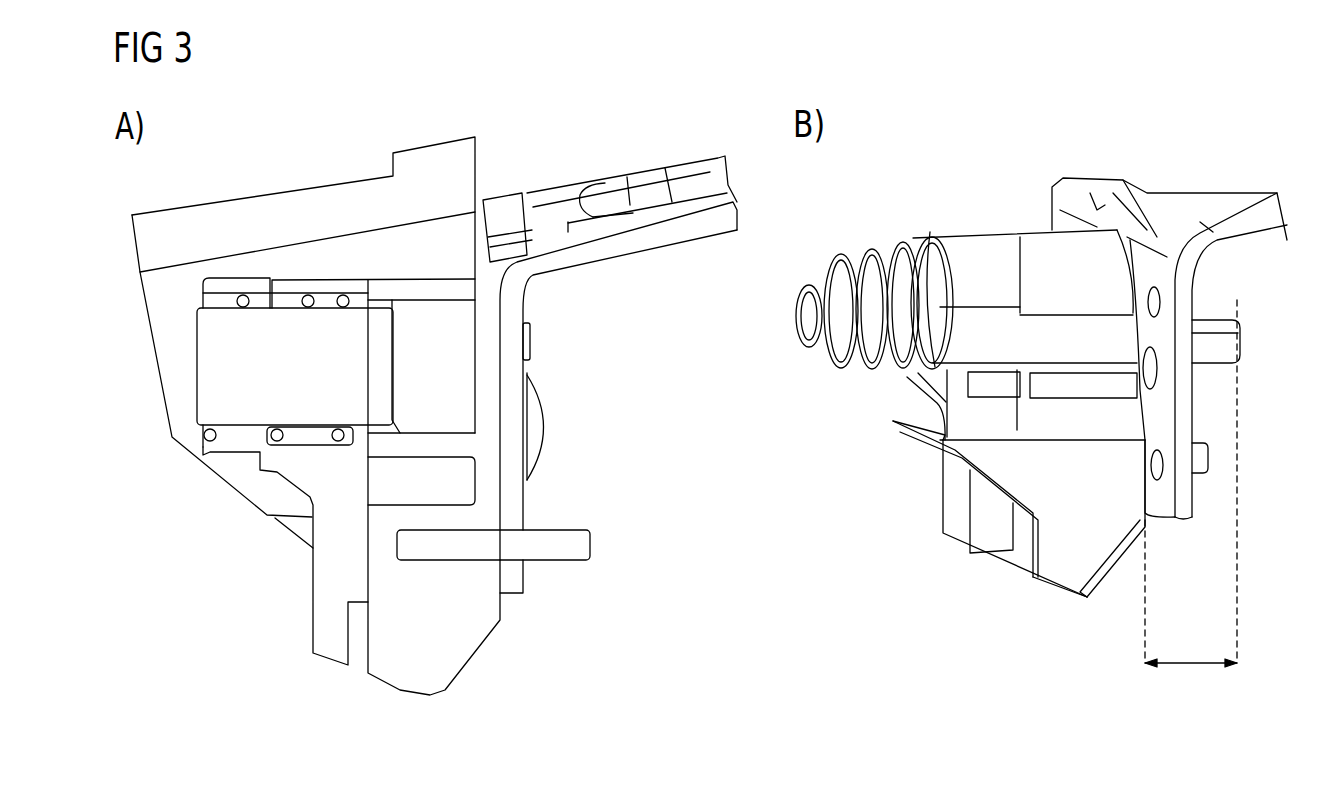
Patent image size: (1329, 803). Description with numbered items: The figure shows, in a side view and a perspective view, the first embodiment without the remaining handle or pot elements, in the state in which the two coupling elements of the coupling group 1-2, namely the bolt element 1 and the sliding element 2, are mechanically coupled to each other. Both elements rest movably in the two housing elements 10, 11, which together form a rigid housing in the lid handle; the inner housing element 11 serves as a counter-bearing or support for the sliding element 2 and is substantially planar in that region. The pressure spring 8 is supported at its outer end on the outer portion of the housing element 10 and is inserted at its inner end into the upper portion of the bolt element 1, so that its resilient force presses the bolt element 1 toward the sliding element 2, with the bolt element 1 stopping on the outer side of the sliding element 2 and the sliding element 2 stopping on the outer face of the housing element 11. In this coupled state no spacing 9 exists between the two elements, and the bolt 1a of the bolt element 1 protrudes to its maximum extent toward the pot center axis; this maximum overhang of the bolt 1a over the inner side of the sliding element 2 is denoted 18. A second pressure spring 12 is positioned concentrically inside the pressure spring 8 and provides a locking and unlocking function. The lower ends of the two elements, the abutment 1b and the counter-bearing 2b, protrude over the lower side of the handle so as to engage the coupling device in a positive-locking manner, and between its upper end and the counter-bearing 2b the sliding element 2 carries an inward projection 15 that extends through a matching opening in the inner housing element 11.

In FIG. 3A, the bolt element 1 is at (318, 480).
In FIG. 3B, the bolt element 1 is at (970, 288).
In FIG. 3A, the bolt 1a is at (224, 645).
In FIG. 3B, the bolt 1a is at (1035, 348).
In FIG. 3A, the abutment 1b is at (327, 637).
In FIG. 3B, the abutment 1b is at (957, 513).
In FIG. 3A, the coupling group 1-2 is at (498, 697).
In FIG. 3B, the coupling group 1-2 is at (1047, 229).
In FIG. 3A, the sliding element 2 is at (300, 535).
In FIG. 3B, the sliding element 2 is at (1077, 300).
In FIG. 3A, the counter-bearing 2b is at (460, 637).
In FIG. 3B, the counter-bearing 2b is at (1087, 563).
In FIG. 3A, the pressure spring 8 is at (243, 306).
In FIG. 3B, the pressure spring 8 is at (852, 262).
In FIG. 3A, the spacing 9 is at (368, 268).
In FIG. 3A, the housing element 10 is at (313, 252).
In FIG. 3A, the inner housing element 11 is at (648, 243).
In FIG. 3B, the inner housing element 11 is at (1165, 268).
In FIG. 3B, the pressure spring 12 is at (805, 283).
In FIG. 3A, the projection 15 is at (570, 547).
In FIG. 3B, the projection 15 is at (1200, 458).
In FIG. 3B, the maximum overhang 18 is at (1190, 668).